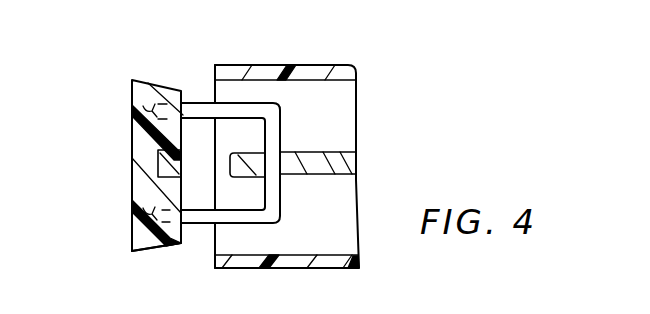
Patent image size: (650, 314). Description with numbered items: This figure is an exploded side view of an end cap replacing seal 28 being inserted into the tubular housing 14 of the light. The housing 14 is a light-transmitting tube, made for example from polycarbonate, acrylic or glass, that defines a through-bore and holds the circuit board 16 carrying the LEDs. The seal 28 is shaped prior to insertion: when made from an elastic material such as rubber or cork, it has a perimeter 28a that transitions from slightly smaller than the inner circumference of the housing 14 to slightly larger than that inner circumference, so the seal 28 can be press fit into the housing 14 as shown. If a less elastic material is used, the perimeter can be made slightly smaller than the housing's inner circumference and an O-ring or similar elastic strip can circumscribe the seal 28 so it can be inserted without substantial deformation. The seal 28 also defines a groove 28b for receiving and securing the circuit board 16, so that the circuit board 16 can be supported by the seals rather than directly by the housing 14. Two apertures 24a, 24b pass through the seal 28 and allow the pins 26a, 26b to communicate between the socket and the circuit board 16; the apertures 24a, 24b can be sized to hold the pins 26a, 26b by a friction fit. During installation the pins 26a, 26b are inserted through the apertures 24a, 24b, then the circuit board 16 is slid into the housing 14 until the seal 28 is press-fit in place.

The tubular housing 14 is at (323, 64).
The circuit board 16 is at (326, 152).
The aperture 24a is at (130, 217).
The aperture 24b is at (132, 107).
The pin 26a is at (143, 208).
The pin 26b is at (143, 106).
The seal 28 is at (167, 84).
The perimeter 28a is at (148, 250).
The groove 28b is at (168, 163).